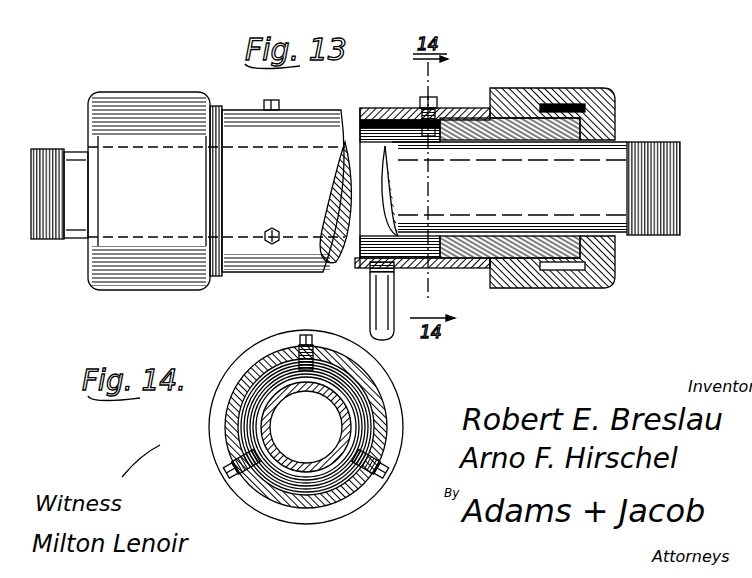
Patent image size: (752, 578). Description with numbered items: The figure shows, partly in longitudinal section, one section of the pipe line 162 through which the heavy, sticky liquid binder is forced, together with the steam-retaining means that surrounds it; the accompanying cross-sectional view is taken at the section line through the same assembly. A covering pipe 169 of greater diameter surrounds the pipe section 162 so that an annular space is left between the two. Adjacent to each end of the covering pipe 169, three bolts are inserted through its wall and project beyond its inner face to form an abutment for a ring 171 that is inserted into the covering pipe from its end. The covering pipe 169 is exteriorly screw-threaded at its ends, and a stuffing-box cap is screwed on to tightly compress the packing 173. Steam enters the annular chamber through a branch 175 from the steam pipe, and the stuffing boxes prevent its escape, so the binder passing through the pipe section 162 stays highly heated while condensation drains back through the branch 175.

In FIG. 13, the pipe line section 162 is at (398, 162).
In FIG. 14, the pipe line section 162 is at (333, 392).
In FIG. 13, the covering pipe 169 is at (363, 110).
In FIG. 14, the covering pipe 169 is at (225, 427).
In FIG. 13, the ring 171 is at (460, 256).
In FIG. 14, the ring 171 is at (343, 378).
In FIG. 13, the packing 173 is at (493, 270).
In FIG. 13, the steam pipe branch 175 is at (370, 300).